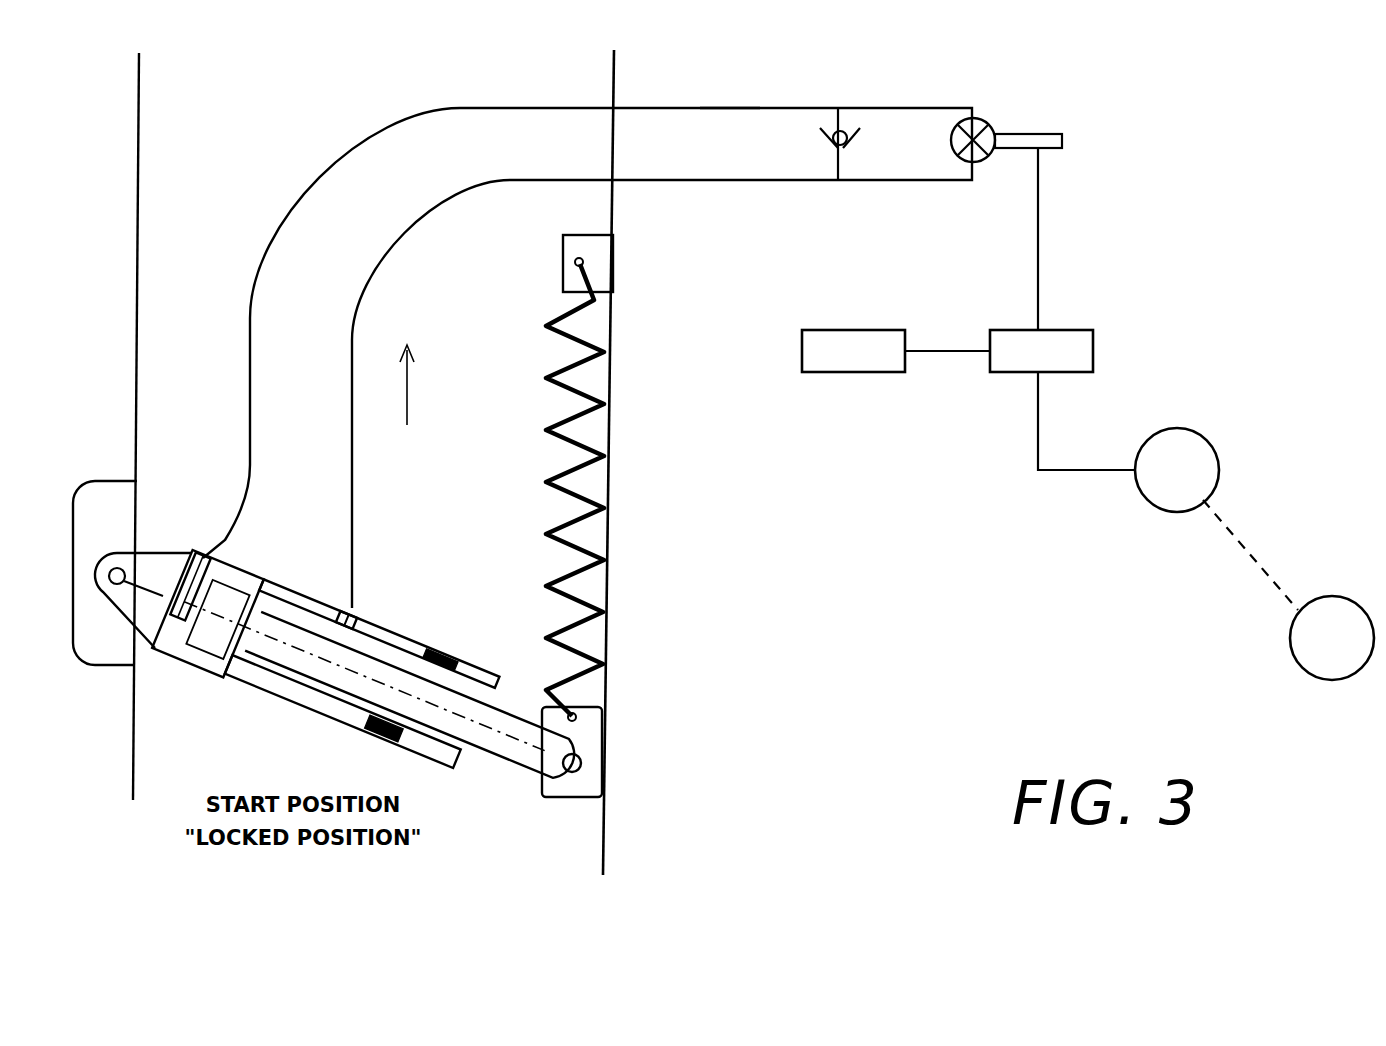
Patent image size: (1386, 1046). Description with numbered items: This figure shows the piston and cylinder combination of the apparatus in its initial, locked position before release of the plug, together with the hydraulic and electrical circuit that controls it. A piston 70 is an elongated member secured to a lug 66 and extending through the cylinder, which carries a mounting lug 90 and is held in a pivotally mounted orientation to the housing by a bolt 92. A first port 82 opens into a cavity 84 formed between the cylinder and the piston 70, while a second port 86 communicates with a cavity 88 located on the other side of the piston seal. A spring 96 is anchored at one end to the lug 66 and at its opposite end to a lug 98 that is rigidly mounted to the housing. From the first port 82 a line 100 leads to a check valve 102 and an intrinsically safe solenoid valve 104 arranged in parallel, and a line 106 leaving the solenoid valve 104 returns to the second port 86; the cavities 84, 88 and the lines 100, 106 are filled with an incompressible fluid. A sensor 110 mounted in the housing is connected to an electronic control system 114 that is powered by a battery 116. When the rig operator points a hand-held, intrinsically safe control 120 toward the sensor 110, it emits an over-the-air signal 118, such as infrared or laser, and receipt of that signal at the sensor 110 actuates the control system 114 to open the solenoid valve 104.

The lug 66 is at (583, 800).
The piston 70 is at (490, 760).
The first port 82 is at (338, 611).
The cavity 84 is at (380, 635).
The second port 86 is at (205, 565).
The cavity 88 is at (203, 642).
The mounting lug 90 is at (157, 553).
The bolt 92 is at (108, 550).
The spring 96 is at (555, 520).
The lug 98 is at (598, 237).
The line 100 is at (400, 245).
The check valve 102 is at (856, 142).
The solenoid valve 104 is at (1015, 130).
The line 106 is at (737, 106).
The sensor 110 is at (1205, 438).
The electronic control system 114 is at (1083, 330).
The battery 116 is at (860, 330).
The signal 118 is at (1253, 553).
The control 120 is at (1325, 680).